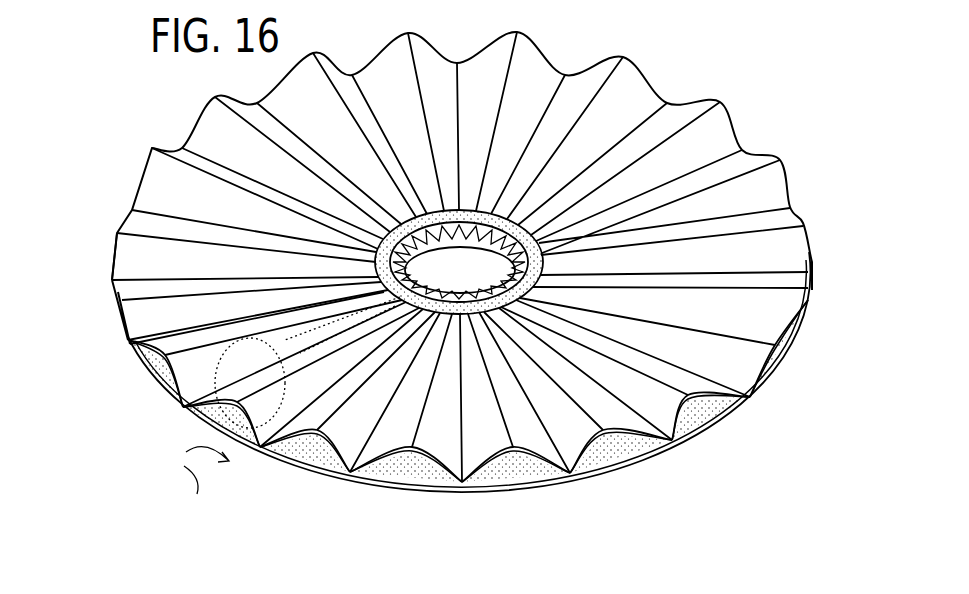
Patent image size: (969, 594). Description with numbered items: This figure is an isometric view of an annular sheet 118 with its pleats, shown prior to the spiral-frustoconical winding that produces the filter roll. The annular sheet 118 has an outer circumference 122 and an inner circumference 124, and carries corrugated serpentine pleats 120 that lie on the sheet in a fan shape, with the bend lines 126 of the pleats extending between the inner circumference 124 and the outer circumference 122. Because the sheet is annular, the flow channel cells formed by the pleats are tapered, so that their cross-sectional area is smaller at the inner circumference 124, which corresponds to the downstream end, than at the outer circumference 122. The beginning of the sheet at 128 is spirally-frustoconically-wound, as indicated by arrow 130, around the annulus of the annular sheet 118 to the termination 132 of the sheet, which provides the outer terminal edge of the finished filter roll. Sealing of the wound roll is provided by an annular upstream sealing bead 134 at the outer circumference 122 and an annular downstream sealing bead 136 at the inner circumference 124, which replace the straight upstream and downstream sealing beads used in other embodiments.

The annular sheet 118 is at (618, 472).
The corrugated serpentine pleats 120 is at (663, 418).
The outer circumference 122 is at (776, 372).
The inner circumference 124 is at (467, 222).
The bend lines 126 is at (570, 481).
The beginning of the sheet 128 is at (133, 347).
The arrow 130 is at (185, 465).
The termination of the sheet 132 is at (130, 343).
The annular upstream sealing bead 134 is at (523, 467).
The annular downstream sealing bead 136 is at (459, 262).